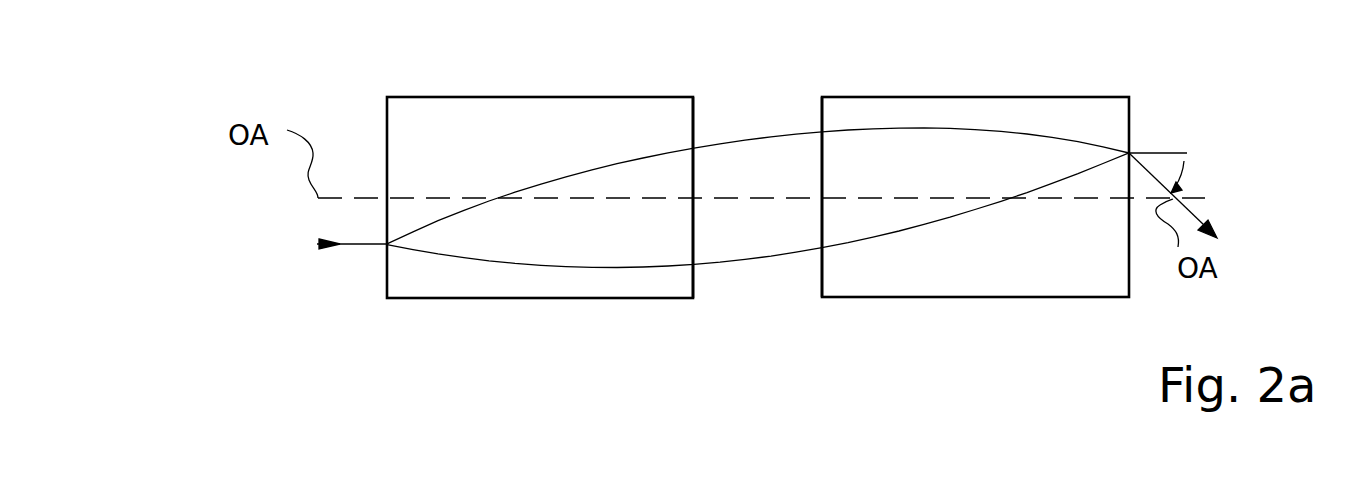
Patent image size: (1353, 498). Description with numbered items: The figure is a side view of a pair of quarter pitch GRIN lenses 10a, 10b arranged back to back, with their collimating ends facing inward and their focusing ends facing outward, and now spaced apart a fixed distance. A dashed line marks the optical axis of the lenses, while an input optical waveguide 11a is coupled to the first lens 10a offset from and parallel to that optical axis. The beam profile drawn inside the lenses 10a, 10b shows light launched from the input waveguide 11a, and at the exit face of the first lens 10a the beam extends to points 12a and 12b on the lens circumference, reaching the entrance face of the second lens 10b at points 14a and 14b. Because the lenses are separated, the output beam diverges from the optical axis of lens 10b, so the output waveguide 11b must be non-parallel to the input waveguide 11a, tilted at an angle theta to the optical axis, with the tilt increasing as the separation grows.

The quarter pitch GRIN lens 10a is at (510, 115).
The quarter pitch GRIN lens 10b is at (1013, 103).
The input optical waveguide 11a is at (353, 242).
The output optical waveguide 11b is at (1192, 195).
The circumference point 12a is at (694, 147).
The circumference point 12b is at (694, 266).
The upper entrance surface of second plate 14a is at (822, 131).
The lower entrance surface of second plate 14b is at (822, 248).